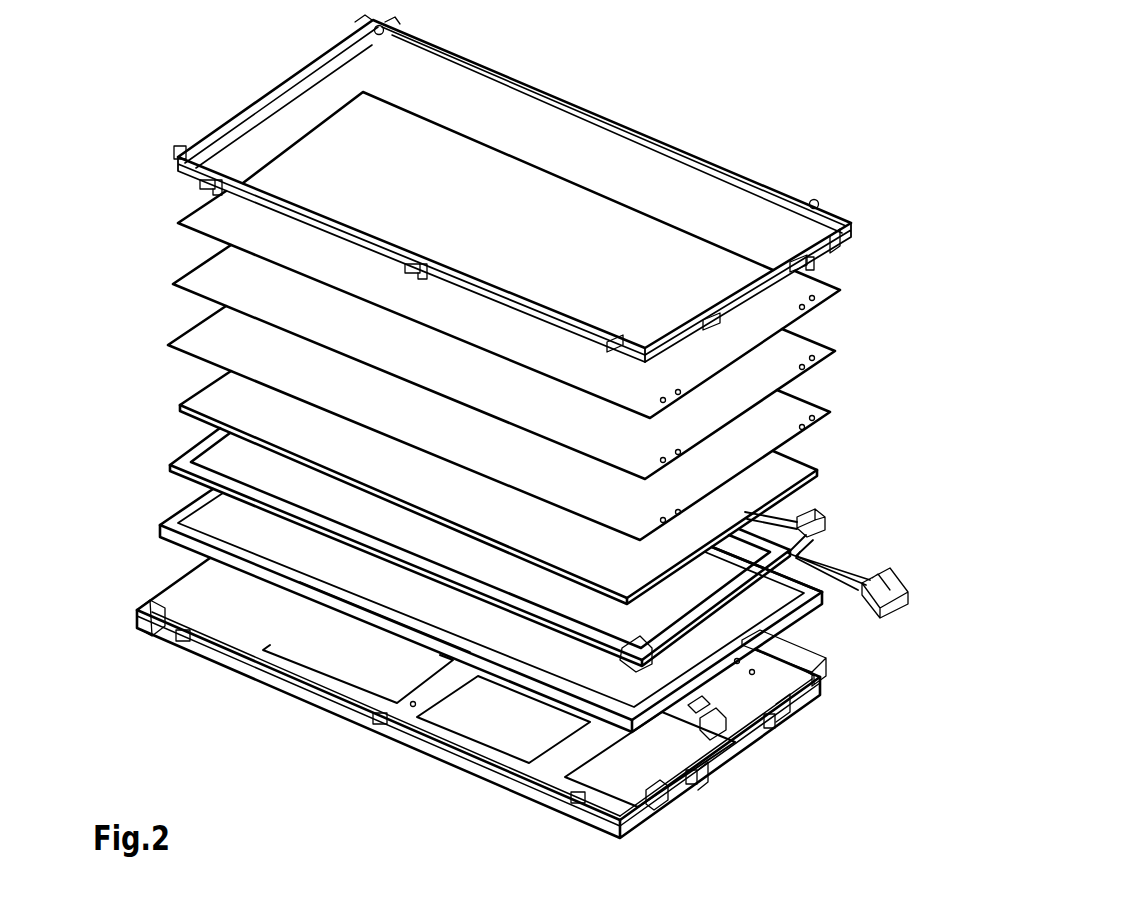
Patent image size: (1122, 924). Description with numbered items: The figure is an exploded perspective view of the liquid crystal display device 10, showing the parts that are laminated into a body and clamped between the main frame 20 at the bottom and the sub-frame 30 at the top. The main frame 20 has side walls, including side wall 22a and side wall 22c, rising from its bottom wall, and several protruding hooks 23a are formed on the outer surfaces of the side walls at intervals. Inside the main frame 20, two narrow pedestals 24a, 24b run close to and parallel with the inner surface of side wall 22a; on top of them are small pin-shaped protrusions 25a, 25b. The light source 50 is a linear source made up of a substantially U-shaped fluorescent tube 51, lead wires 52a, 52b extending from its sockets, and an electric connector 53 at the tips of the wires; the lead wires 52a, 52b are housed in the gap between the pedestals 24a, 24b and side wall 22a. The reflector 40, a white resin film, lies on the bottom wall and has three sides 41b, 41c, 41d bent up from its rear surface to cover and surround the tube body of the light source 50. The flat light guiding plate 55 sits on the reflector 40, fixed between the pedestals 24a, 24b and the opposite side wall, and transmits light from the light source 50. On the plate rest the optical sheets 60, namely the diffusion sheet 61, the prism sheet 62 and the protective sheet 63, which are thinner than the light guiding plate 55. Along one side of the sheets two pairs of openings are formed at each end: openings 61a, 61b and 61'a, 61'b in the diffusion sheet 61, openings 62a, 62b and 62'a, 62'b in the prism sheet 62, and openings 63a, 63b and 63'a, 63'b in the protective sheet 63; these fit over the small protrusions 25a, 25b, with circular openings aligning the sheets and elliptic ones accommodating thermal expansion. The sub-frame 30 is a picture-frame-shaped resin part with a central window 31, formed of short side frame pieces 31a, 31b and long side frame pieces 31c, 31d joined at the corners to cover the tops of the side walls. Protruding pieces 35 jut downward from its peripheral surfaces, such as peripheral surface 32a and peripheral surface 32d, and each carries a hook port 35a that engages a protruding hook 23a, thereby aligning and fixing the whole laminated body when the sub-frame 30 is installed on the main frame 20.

The liquid crystal display device 10 is at (700, 67).
The main frame 20 is at (456, 768).
The side wall 22a is at (736, 752).
The side wall 22c is at (262, 684).
The protruding hook 23a is at (178, 645).
The pedestal 24a is at (790, 700).
The pedestal 24b is at (708, 770).
The small protrusion 25a is at (806, 666).
The small protrusion 25b is at (660, 800).
The sub-frame 30 is at (745, 166).
The window 31 is at (430, 72).
The short side frame piece 31a is at (838, 250).
The short side frame piece 31b is at (283, 95).
The long side frame piece 31c is at (309, 215).
The long side frame piece 31d is at (628, 131).
The peripheral surface 32a is at (846, 259).
The peripheral surface 32d is at (538, 93).
The protruding piece 35 is at (204, 189).
The hook port 35a is at (219, 198).
The reflector 40 is at (155, 527).
The bent side of reflector 41b is at (188, 497).
The bent side of reflector 41c is at (352, 622).
The bent side of reflector 41d is at (746, 556).
The light source 50 is at (160, 467).
The fluorescent tube 51 is at (808, 522).
The lead wire 52a is at (845, 581).
The lead wire 52b is at (834, 596).
The electric connector 53 is at (902, 614).
The light guiding plate 55 is at (179, 406).
The optical sheets 60 is at (135, 232).
The diffusion sheet 61 is at (511, 427).
The opening 61a is at (665, 522).
The opening 61b is at (681, 513).
The opening 61'a is at (843, 416).
The opening 61'b is at (832, 436).
The prism sheet 62 is at (510, 364).
The opening 62a is at (665, 462).
The opening 62b is at (681, 452).
The opening 62'a is at (844, 356).
The opening 62'b is at (833, 375).
The protective sheet 63 is at (510, 307).
The opening 63a is at (665, 402).
The opening 63b is at (680, 392).
The opening 63'a is at (844, 299).
The opening 63'b is at (835, 317).